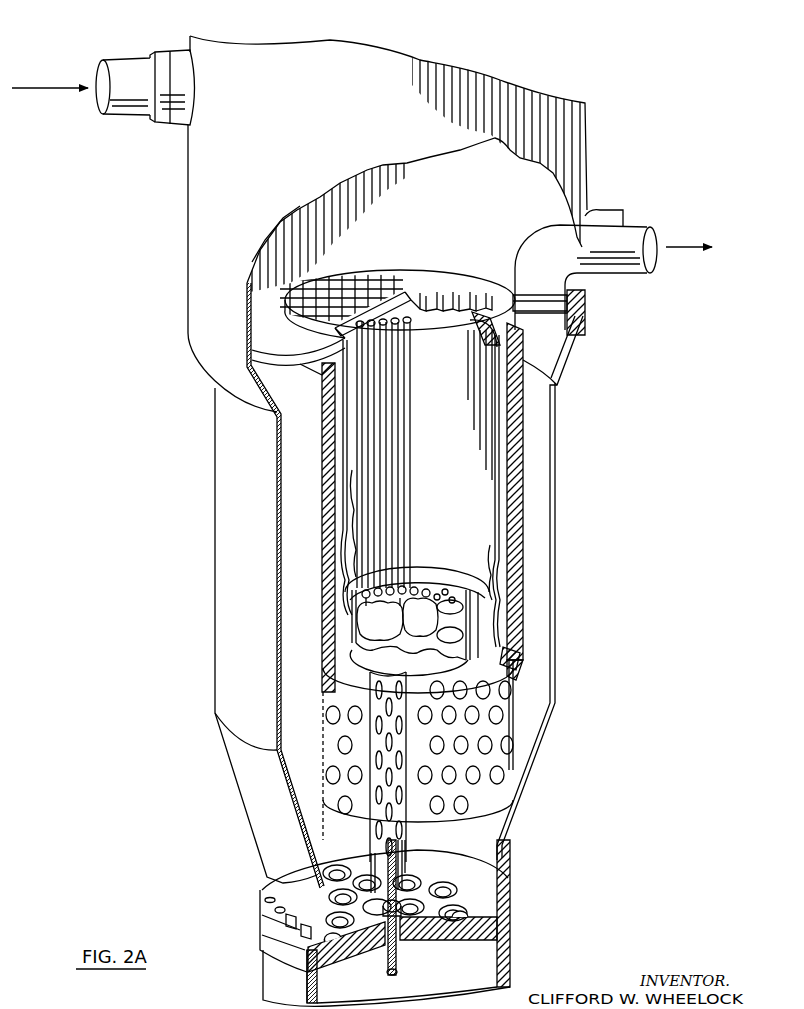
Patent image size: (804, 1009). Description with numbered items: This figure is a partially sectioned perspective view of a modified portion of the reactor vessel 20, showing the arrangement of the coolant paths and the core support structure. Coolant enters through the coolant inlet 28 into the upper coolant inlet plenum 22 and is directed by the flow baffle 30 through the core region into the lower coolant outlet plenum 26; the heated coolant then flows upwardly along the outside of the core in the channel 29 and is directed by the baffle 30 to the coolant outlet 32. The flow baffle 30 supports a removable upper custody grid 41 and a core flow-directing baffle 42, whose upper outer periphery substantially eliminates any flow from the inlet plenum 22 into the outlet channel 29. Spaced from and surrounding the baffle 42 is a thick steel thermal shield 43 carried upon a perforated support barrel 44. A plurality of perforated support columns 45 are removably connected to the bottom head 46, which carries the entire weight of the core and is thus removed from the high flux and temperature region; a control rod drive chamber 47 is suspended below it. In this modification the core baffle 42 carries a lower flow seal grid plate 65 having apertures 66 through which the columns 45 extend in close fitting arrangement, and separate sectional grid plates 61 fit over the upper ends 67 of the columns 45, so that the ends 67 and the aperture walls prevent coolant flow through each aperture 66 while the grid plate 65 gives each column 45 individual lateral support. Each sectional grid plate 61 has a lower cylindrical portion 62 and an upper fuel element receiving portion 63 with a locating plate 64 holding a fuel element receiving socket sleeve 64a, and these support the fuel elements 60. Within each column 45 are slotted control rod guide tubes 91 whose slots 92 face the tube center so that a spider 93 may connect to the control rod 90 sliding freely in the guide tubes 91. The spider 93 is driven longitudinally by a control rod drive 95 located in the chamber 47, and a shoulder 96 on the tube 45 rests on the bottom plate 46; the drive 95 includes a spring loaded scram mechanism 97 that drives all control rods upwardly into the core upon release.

The reactor vessel 20 is at (247, 590).
The upper coolant inlet plenum 22 is at (399, 226).
The lower coolant outlet plenum 26 is at (525, 714).
The coolant inlet 28 is at (128, 85).
The channel 29 is at (537, 467).
The flow baffle 30 is at (270, 327).
The coolant outlet 32 is at (632, 257).
The upper custody grid 41 is at (308, 292).
The core flow-directing baffle 42 is at (500, 590).
The thermal shield 43 is at (515, 645).
The perforated support barrel 44 is at (520, 760).
The perforated support column 45 is at (371, 805).
The bottom head 46 is at (512, 925).
The control rod drive chamber 47 is at (505, 986).
The fuel element 60 is at (375, 507).
The sectional grid plate 61 is at (411, 596).
The lower cylindrical portion 62 is at (419, 633).
The upper fuel element receiving portion 63 is at (425, 600).
The locating plate 64 is at (380, 620).
The fuel element receiving socket sleeve 64a is at (398, 592).
The lower flow seal grid plate 65 is at (445, 668).
The aperture 66 is at (507, 645).
The upper end 67 is at (420, 617).
The control rod 90 is at (373, 860).
The slotted control rod guide tube 91 is at (406, 857).
The slot 92 is at (403, 852).
The spider 93 is at (403, 884).
The control rod drive 95 is at (388, 970).
The shoulder 96 is at (412, 930).
The spring loaded insertion or scram mechanism 97 is at (398, 952).